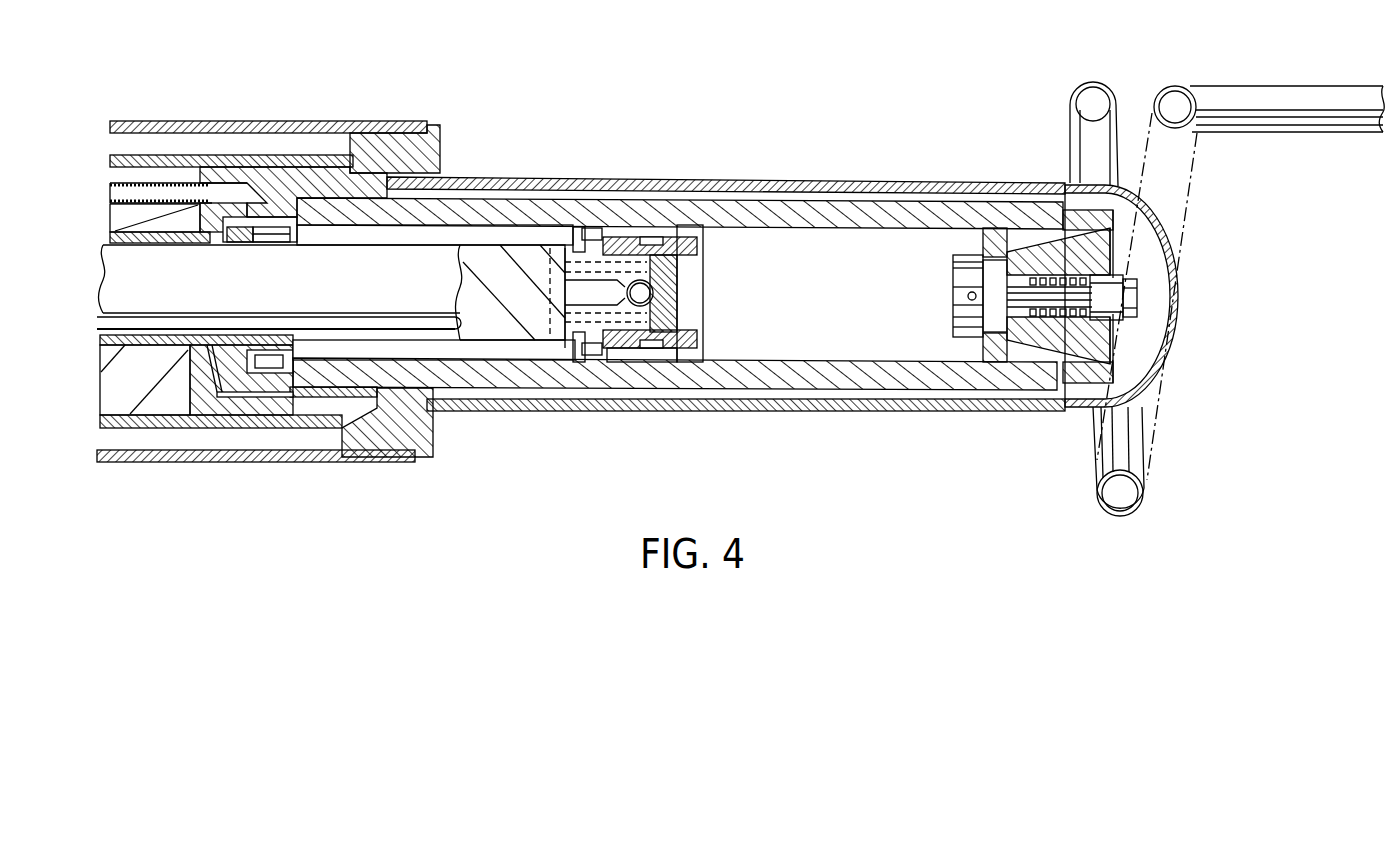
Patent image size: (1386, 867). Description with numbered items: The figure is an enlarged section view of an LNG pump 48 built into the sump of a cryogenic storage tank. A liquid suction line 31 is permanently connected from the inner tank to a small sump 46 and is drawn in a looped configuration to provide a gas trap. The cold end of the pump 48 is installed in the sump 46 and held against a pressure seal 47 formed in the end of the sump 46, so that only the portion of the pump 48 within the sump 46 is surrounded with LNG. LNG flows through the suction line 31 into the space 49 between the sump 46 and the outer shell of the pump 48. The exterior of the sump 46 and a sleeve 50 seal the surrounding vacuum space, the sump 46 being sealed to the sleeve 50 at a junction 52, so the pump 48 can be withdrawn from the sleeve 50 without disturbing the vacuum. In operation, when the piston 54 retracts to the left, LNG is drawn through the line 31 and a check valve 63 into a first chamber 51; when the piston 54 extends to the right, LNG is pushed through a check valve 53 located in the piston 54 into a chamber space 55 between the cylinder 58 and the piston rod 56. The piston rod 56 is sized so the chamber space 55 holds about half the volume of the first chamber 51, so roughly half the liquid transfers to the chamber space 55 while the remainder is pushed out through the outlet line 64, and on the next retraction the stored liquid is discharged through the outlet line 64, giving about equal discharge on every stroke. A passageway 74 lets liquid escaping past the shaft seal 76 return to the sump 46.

The liquid suction line 31 is at (1312, 95).
The sump 46 is at (530, 410).
The pressure seal 47 is at (367, 175).
The pump 48 is at (232, 163).
The space 49 is at (1145, 347).
The sleeve 50 is at (320, 121).
The first chamber 51 is at (850, 307).
The junction 52 is at (447, 458).
The check valve 53 is at (653, 293).
The piston 54 is at (607, 356).
The chamber space 55 is at (440, 232).
The piston rod 56 is at (493, 270).
The cylinder 58 is at (640, 207).
The check valve 63 is at (1115, 289).
The outlet line 64 is at (165, 186).
The passageway 74 is at (290, 397).
The shaft seal 76 is at (268, 334).